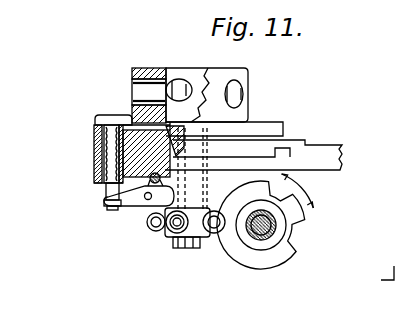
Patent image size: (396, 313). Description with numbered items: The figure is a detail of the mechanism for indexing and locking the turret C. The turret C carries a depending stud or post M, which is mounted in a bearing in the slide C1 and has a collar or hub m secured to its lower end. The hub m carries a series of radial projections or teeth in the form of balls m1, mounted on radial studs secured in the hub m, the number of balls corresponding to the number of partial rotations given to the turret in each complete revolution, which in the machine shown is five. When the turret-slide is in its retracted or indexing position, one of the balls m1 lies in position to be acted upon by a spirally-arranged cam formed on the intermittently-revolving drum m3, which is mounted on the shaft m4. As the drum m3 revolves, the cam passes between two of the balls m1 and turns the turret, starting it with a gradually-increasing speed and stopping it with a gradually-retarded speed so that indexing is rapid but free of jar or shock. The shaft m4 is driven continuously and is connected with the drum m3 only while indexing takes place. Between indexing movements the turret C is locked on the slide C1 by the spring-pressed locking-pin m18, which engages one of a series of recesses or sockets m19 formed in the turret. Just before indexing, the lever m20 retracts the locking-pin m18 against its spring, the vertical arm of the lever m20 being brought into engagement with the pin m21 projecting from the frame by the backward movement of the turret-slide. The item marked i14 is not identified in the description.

The recess or socket m19 is at (109, 118).
The spring-pressed locking-pin m18 is at (96, 150).
The turret C is at (243, 108).
The slide C1 is at (318, 170).
The depending stud or post M is at (186, 128).
The pin m21 is at (194, 170).
The collar or hub m is at (208, 240).
The ball m1 is at (149, 232).
The lever m20 is at (130, 208).
The intermittently-revolving drum m3 is at (282, 227).
The shaft m4 is at (258, 235).
The connecting link i14 is at (377, 282).